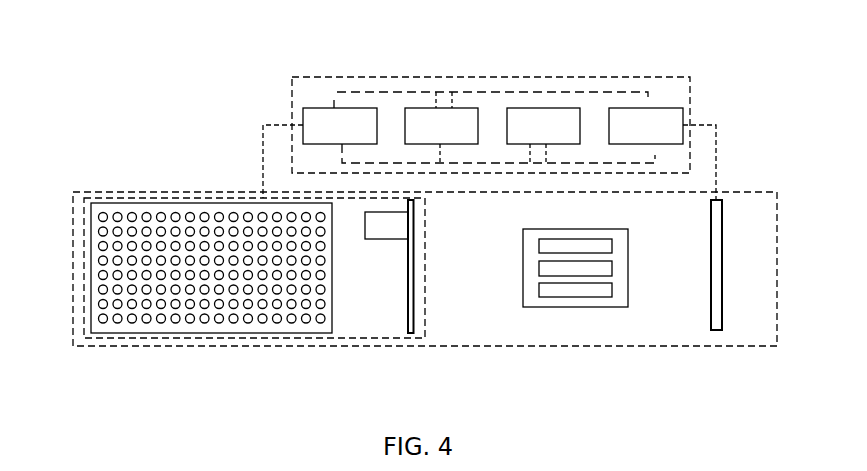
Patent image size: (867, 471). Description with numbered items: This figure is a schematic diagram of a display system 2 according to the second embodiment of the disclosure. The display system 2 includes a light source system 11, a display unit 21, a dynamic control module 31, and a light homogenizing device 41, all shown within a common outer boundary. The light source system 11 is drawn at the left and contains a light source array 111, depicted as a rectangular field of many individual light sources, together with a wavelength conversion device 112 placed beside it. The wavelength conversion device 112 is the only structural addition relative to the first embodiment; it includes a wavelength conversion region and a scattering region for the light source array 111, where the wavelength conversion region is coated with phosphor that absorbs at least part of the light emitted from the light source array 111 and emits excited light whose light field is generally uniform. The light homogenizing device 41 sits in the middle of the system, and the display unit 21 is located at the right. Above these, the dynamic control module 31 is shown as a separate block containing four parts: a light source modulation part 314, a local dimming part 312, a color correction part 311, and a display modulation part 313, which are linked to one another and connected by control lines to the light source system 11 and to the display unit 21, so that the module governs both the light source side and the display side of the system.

The display system 2 is at (452, 424).
The light source system 11 is at (84, 237).
The light source array 111 is at (170, 203).
The wavelength conversion device 112 is at (413, 305).
The display unit 21 is at (722, 280).
The dynamic control module 31 is at (690, 102).
The color correction part 311 is at (537, 108).
The local dimming part 312 is at (423, 108).
The display modulation part 313 is at (640, 108).
The light source modulation part 314 is at (318, 108).
The light homogenizing device 41 is at (577, 307).